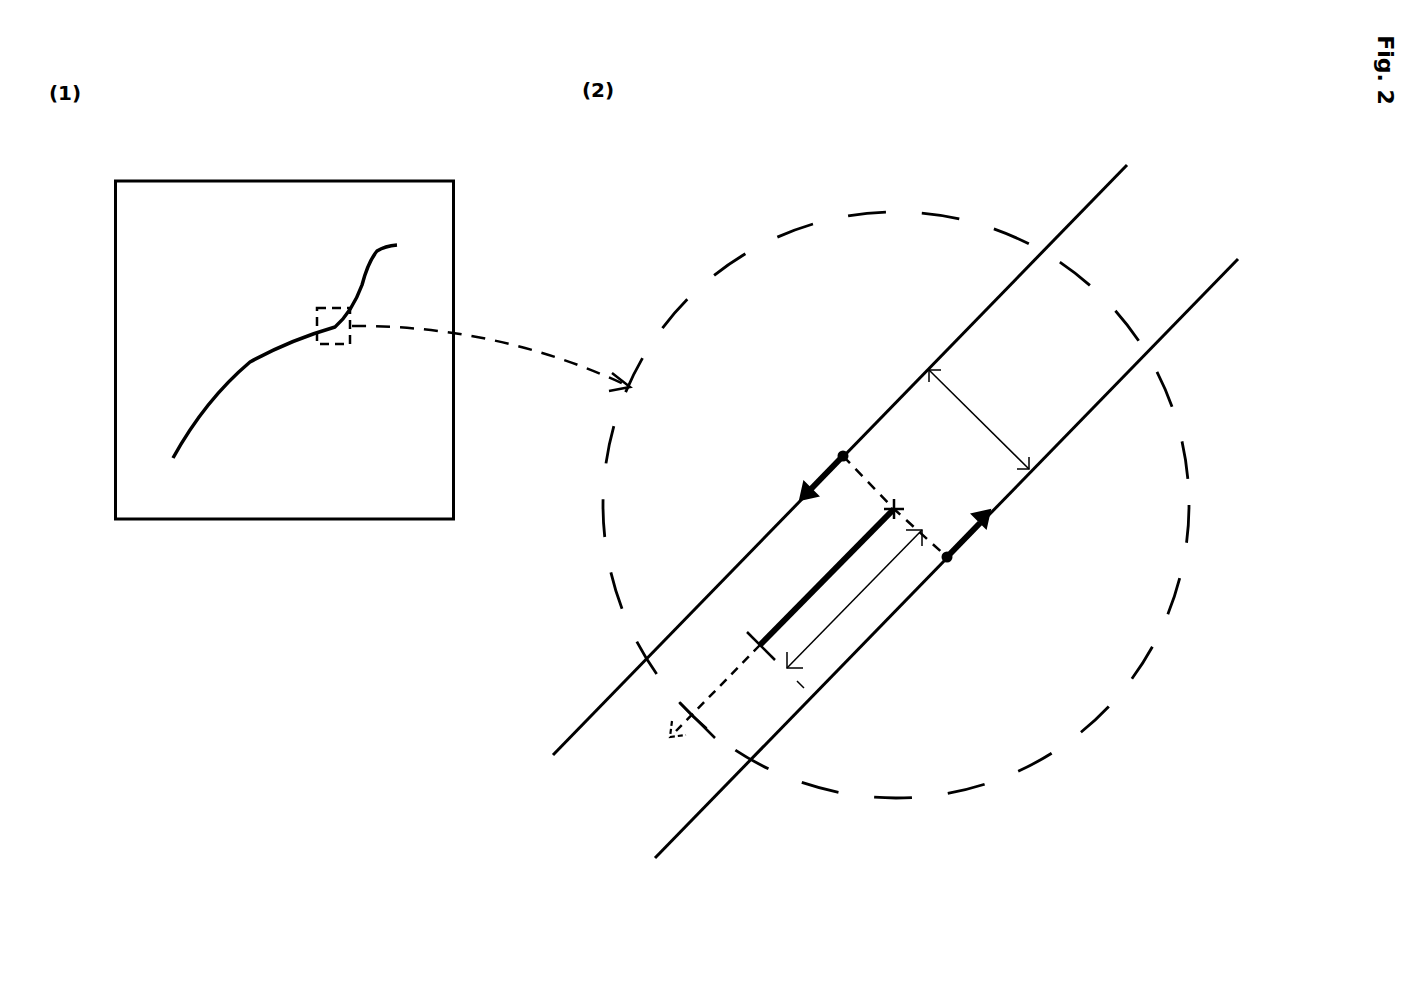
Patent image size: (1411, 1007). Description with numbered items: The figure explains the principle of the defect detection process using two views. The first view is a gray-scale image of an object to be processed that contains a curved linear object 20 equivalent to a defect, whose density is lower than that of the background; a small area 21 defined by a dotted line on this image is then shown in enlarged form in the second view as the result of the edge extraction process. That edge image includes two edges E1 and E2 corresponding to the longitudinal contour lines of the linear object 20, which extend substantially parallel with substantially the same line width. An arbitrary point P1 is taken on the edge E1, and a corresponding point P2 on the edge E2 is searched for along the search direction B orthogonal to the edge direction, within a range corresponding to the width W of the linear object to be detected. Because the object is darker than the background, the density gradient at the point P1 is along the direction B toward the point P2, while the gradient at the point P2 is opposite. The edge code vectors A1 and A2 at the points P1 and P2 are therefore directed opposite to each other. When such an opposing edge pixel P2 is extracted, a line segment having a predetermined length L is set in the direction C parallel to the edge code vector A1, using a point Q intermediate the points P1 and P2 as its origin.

The linear object 20 is at (378, 250).
The area 21 is at (326, 305).
The edge E1 is at (1108, 183).
The edge E2 is at (1215, 285).
The width of the linear object W is at (979, 419).
The point P1 is at (830, 442).
The point P2 is at (960, 572).
The edge code vector A1 is at (802, 478).
The edge code vector A2 is at (990, 533).
The point Q is at (895, 506).
The search direction B is at (844, 584).
The predetermined length L is at (854, 609).
The direction C is at (705, 691).